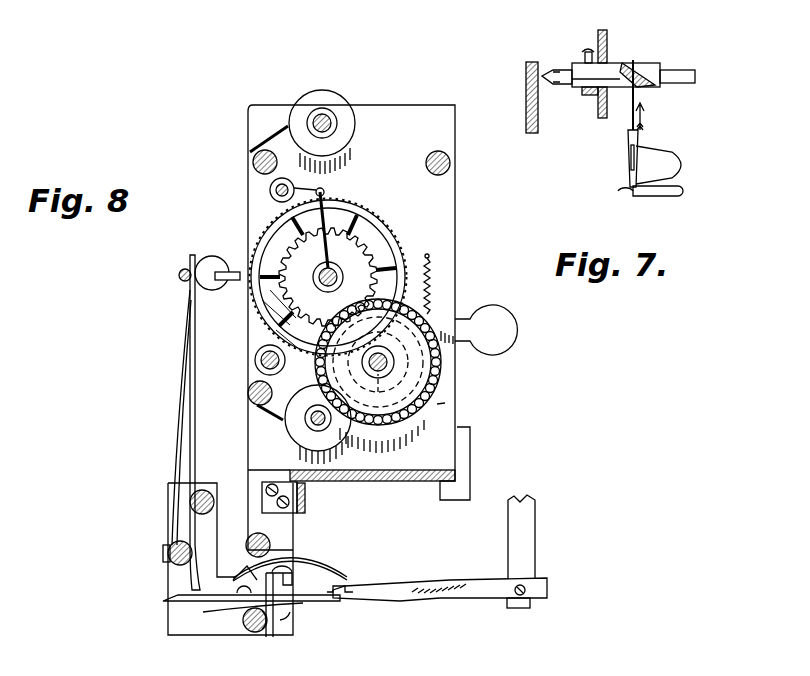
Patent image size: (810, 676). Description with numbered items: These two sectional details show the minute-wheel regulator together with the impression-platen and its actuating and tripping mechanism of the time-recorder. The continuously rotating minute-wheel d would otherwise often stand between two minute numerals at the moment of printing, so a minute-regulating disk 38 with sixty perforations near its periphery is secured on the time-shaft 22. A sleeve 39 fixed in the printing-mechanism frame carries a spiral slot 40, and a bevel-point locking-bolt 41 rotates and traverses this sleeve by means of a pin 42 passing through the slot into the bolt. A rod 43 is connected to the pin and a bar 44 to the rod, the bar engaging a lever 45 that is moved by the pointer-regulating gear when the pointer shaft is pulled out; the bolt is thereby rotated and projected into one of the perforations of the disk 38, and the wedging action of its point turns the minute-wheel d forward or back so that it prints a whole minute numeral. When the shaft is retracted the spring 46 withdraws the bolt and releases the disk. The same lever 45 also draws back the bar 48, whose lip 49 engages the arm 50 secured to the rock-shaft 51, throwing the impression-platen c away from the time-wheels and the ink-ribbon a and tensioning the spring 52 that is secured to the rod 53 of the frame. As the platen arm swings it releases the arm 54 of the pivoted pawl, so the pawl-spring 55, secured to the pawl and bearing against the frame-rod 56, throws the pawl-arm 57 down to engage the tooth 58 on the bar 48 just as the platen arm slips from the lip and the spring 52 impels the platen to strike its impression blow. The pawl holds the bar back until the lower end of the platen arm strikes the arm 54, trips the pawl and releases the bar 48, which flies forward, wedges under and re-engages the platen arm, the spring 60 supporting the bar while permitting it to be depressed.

In FIG. 8, the shaft 22 is at (392, 373).
In FIG. 8, the minute-regulating disk 38 is at (445, 403).
In FIG. 7, the minute-regulating disk 38 is at (529, 112).
In FIG. 7, the sleeve 39 is at (652, 65).
In FIG. 7, the spiral slot 40 is at (628, 54).
In FIG. 7, the bevel-point locking-bolt 41 is at (560, 63).
In FIG. 7, the pin 42 is at (655, 85).
In FIG. 7, the rod 43 is at (630, 118).
In FIG. 7, the bar 44 is at (684, 191).
In FIG. 8, the lever 45 is at (533, 551).
In FIG. 7, the spring 46 is at (680, 158).
In FIG. 8, the bar 48 is at (492, 597).
In FIG. 8, the lip 49 is at (170, 599).
In FIG. 8, the arm 50 is at (196, 577).
In FIG. 8, the rock-shaft 51 is at (230, 546).
In FIG. 8, the spring 52 is at (182, 463).
In FIG. 8, the rod 53 is at (163, 553).
In FIG. 8, the arm of the pivoted pawl 54 is at (244, 563).
In FIG. 8, the pawl-spring 55 is at (250, 633).
In FIG. 8, the frame-rod 56 is at (270, 637).
In FIG. 8, the pawl-arm 57 is at (290, 560).
In FIG. 8, the tooth 58 is at (355, 595).
In FIG. 8, the spring 60 is at (290, 620).
In FIG. 8, the ink-ribbon a is at (269, 281).
In FIG. 8, the impression-platen c is at (209, 263).
In FIG. 8, the minute-wheel d is at (329, 272).